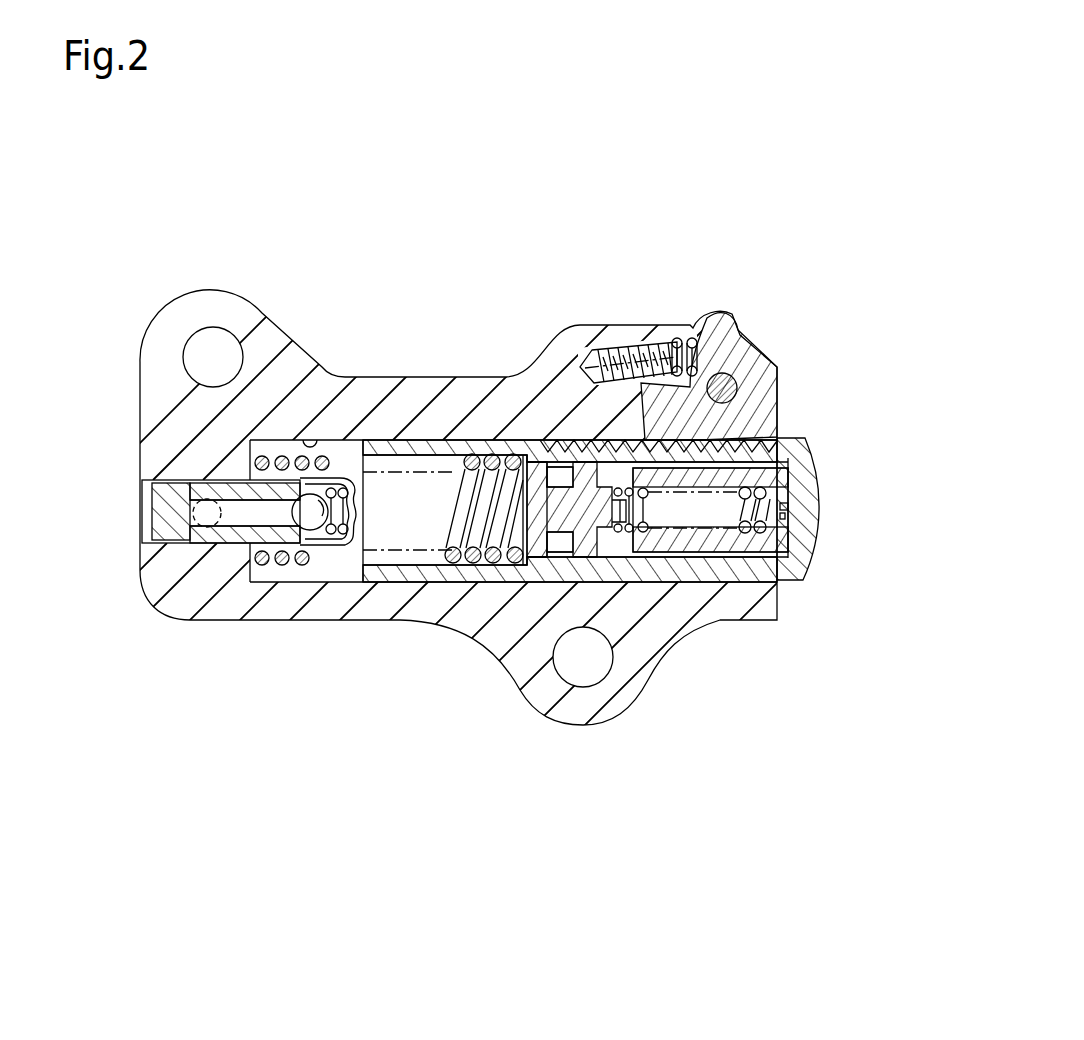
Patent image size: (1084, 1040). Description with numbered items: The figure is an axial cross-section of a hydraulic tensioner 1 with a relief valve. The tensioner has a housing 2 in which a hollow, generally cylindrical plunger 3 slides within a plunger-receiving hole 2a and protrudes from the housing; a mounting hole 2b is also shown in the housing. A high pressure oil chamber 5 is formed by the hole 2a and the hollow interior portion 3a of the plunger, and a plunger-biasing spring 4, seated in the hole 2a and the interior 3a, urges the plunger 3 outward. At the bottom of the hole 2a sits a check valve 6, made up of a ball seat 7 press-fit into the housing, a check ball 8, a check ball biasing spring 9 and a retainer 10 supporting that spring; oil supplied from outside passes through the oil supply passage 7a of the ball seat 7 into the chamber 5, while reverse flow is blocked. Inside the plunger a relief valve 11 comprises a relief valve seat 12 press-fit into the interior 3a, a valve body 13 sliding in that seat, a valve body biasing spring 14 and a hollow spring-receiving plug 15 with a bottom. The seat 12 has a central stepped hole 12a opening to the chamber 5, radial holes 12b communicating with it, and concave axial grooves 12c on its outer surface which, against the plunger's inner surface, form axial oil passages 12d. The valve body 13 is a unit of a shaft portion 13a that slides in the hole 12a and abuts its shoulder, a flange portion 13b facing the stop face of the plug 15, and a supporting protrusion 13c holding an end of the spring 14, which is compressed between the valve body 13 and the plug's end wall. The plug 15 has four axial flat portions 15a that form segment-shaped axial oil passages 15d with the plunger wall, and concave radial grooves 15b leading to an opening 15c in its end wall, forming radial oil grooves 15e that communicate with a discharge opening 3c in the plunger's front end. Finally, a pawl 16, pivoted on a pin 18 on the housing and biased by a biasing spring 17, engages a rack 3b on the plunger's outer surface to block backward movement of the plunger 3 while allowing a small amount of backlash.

The tensioner 1 is at (471, 232).
The housing 2 is at (483, 484).
The plunger-receiving hole 2a is at (310, 437).
The mounting hole 2b is at (192, 352).
The plunger 3 is at (631, 425).
The hollow interior portion of the plunger 3a is at (418, 447).
The rack 3b is at (648, 438).
The discharge opening 3c is at (819, 503).
The plunger-biasing spring 4 is at (283, 455).
The high pressure oil chamber 5 is at (418, 516).
The check valve 6 is at (214, 582).
The ball seat 7 is at (186, 557).
The oil supply passage 7a is at (247, 503).
The check ball 8 is at (297, 528).
The check ball biasing spring 9 is at (338, 530).
The retainer 10 is at (347, 543).
The relief valve 11 is at (696, 578).
The relief valve seat 12 is at (526, 556).
The stepped hole 12a is at (474, 462).
The radial holes 12b is at (526, 505).
The axial grooves 12c is at (558, 468).
The axial oil passages 12d is at (565, 407).
The valve body 13 is at (593, 650).
The shaft portion 13a is at (552, 565).
The flange portion 13b is at (600, 565).
The supporting protrusion 13c is at (647, 560).
The valve body biasing spring 14 is at (670, 530).
The spring-receiving plug 15 is at (794, 658).
The axial flat portions 15a is at (705, 548).
The concave radial grooves 15b is at (710, 477).
The opening 15c is at (790, 512).
The axial oil passages 15d is at (765, 596).
The radial oil grooves 15e is at (794, 530).
The pawl 16 is at (743, 371).
The biasing spring 17 is at (688, 343).
The pin 18 is at (735, 380).